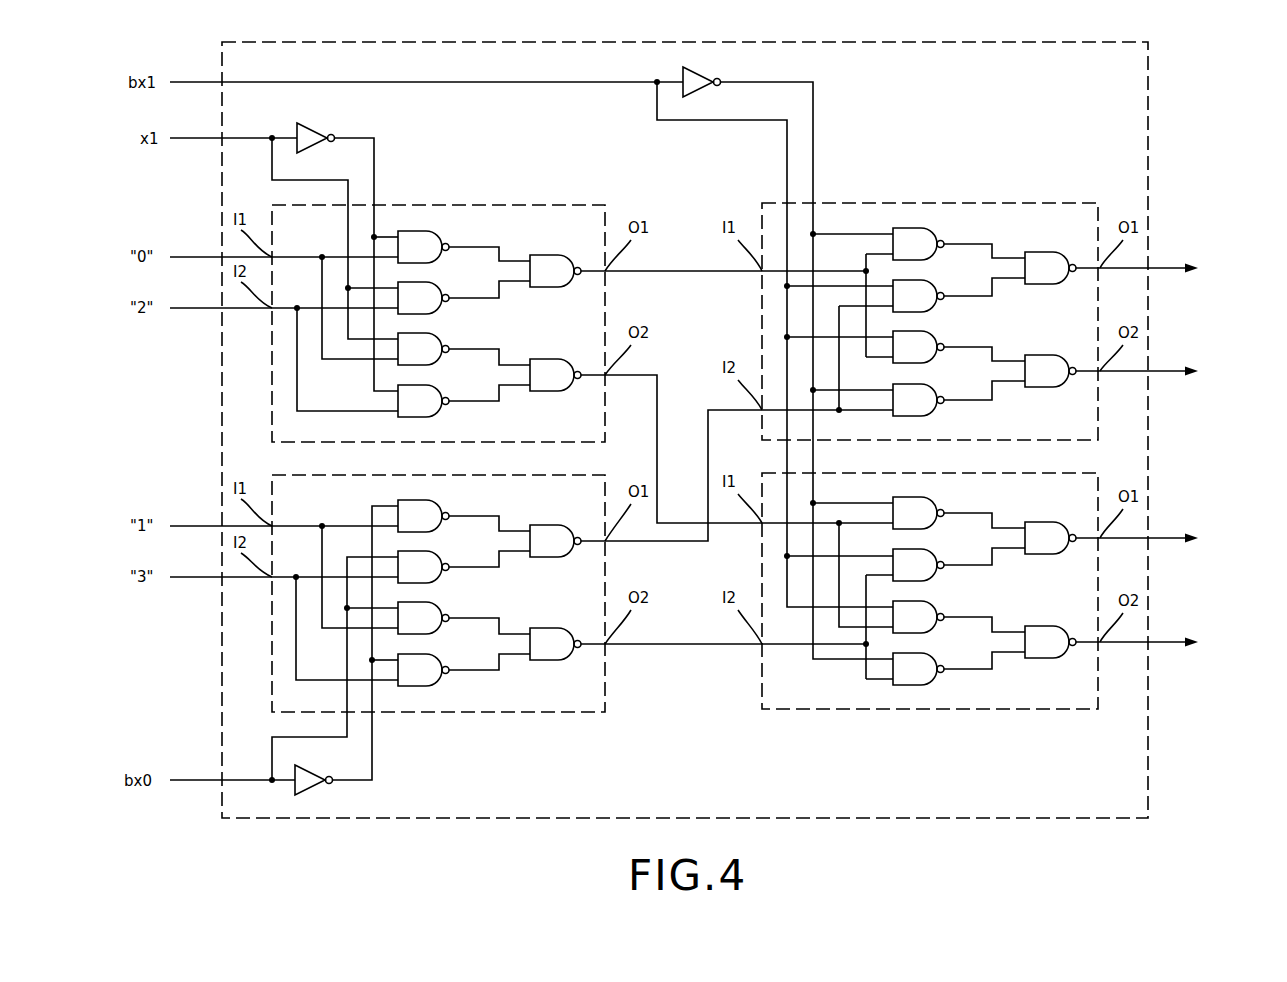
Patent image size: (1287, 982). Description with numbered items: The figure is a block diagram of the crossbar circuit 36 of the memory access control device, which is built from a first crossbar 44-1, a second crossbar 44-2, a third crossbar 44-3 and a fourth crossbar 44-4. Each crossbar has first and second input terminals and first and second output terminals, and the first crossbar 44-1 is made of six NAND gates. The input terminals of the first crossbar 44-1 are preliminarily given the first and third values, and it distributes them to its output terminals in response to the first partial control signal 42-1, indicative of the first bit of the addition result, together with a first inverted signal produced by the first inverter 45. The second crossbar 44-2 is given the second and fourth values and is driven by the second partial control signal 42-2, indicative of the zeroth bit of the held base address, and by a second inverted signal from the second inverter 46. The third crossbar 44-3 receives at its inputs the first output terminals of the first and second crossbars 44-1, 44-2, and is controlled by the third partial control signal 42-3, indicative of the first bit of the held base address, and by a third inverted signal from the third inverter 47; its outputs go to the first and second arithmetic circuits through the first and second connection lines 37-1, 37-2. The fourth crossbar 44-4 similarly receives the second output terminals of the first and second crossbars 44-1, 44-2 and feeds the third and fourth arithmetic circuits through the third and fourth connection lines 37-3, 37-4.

The crossbar circuit 36 is at (1148, 100).
The first connection line 37-1 is at (1170, 268).
The second connection line 37-2 is at (1170, 371).
The third connection line 37-3 is at (1170, 538).
The fourth connection line 37-4 is at (1170, 642).
The first partial control signal 42-1 is at (195, 142).
The second partial control signal 42-2 is at (193, 786).
The third partial control signal 42-3 is at (195, 86).
The first crossbar 44-1 is at (443, 205).
The second crossbar 44-2 is at (447, 713).
The third crossbar 44-3 is at (913, 203).
The fourth crossbar 44-4 is at (918, 710).
The first inverter 45 is at (316, 131).
The second inverter 46 is at (312, 789).
The third inverter 47 is at (700, 74).